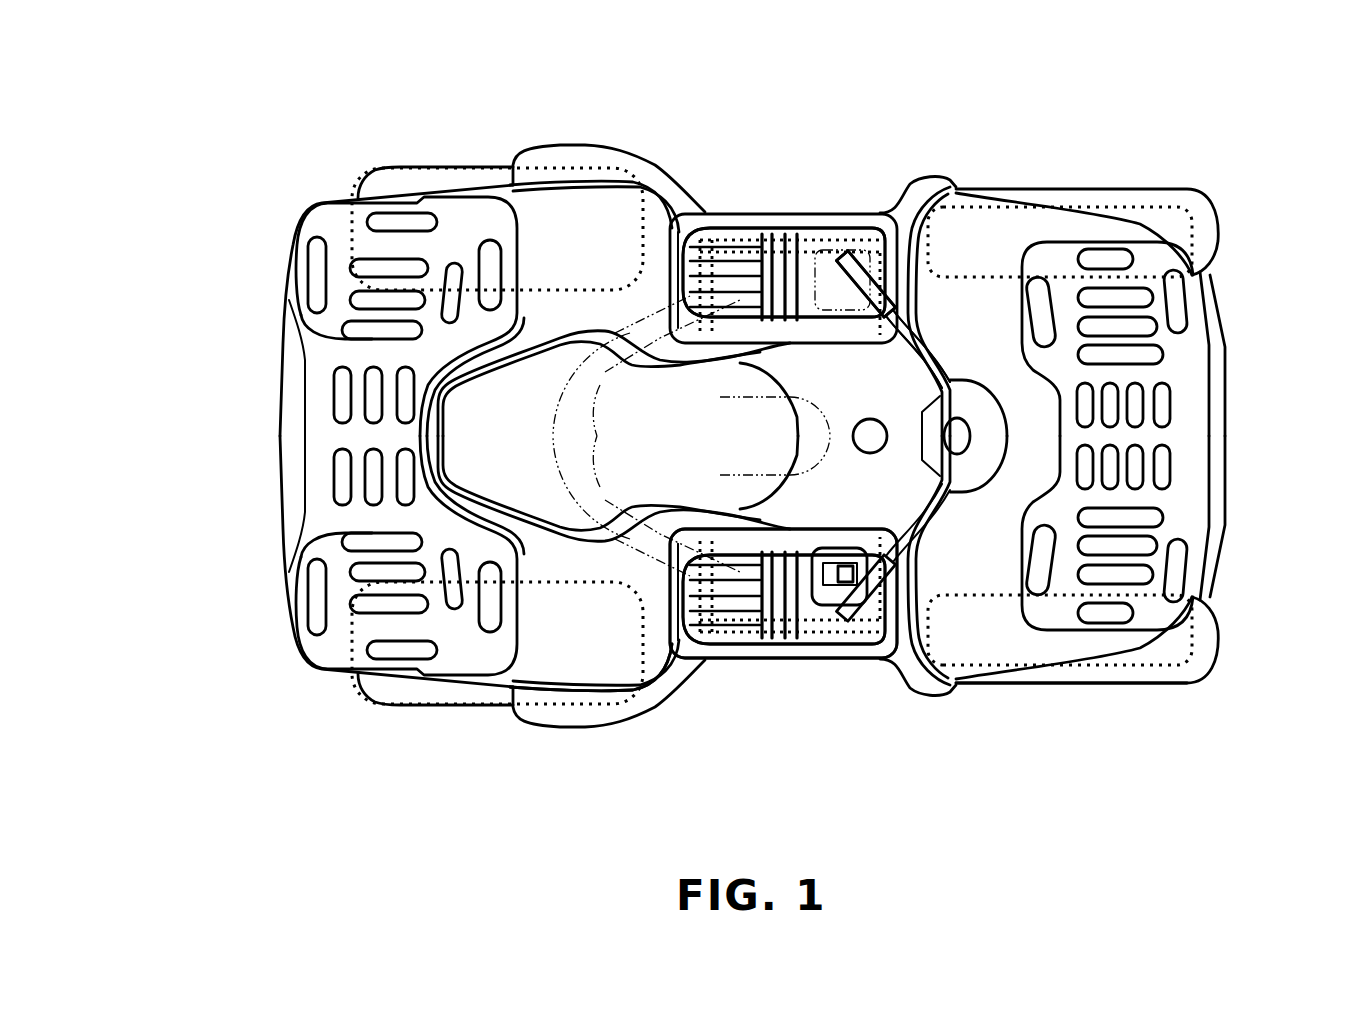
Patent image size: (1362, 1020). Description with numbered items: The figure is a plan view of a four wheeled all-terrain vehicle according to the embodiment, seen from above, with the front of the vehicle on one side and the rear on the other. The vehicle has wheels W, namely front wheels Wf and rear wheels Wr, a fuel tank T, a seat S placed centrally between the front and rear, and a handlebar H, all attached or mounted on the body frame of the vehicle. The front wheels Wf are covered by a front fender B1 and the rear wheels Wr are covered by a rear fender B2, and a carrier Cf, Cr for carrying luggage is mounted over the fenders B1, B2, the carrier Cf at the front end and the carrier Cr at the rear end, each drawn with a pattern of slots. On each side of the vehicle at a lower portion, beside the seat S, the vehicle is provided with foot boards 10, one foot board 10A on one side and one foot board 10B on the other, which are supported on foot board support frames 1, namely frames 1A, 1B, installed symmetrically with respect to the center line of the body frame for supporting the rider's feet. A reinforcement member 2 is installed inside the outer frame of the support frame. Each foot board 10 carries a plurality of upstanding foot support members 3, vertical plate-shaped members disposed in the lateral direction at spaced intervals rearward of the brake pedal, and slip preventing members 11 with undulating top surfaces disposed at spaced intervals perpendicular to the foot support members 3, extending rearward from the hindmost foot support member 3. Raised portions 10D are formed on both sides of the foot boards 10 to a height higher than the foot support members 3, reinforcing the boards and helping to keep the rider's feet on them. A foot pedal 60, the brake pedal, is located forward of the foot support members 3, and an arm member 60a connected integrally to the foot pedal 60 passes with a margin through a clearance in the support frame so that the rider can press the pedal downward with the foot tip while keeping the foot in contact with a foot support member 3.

The foot board support frame 1 is at (862, 618).
The reinforcement member 2 is at (712, 648).
The foot support member 3 is at (822, 620).
The foot board 10 is at (913, 185).
The foot board 10A is at (814, 612).
The foot board 10B is at (810, 236).
The raised portion 10D is at (820, 242).
The foot board support frame 1A is at (738, 645).
The foot board support frame 1B is at (727, 228).
The slip preventing member 11 is at (708, 213).
The foot pedal 60 is at (836, 612).
The arm member 60a is at (830, 620).
The front fender B1 is at (975, 575).
The rear fender B2 is at (563, 650).
The carrier Cf is at (1185, 437).
The carrier Cr is at (320, 441).
The handlebar H is at (928, 345).
The seat S is at (533, 377).
The fuel tank T is at (770, 228).
The wheel W is at (402, 688).
The front wheel Wf is at (1156, 205).
The rear wheel Wr is at (416, 178).